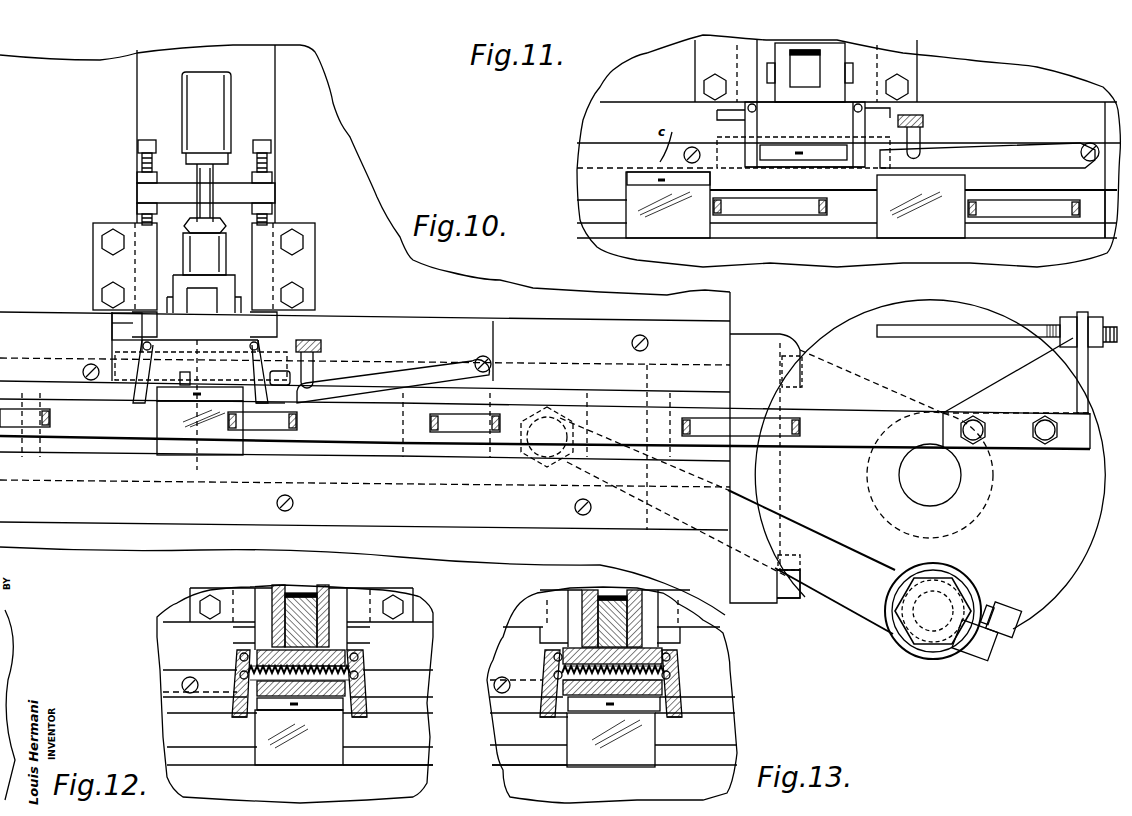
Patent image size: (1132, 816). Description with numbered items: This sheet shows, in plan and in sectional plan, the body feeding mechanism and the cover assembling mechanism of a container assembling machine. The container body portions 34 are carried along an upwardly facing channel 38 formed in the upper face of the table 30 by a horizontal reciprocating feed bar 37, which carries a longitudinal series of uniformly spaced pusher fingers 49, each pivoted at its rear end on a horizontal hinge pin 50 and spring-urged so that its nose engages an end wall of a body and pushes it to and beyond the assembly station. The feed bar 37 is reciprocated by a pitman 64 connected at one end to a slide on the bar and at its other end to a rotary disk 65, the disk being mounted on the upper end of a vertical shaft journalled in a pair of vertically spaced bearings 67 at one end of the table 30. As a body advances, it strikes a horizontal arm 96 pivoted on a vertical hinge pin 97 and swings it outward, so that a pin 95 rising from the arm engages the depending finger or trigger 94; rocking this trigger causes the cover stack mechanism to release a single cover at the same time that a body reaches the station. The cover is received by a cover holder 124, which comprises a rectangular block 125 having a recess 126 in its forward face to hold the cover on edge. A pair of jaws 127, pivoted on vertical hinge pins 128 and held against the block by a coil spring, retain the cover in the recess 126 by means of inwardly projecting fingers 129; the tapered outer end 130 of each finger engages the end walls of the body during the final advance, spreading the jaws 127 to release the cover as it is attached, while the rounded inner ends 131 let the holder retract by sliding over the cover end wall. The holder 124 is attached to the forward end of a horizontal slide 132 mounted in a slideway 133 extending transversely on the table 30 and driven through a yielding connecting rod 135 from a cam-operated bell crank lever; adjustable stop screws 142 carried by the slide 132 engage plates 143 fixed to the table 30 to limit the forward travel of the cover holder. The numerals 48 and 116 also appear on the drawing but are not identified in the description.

In FIG. 10, the table 30 is at (330, 110).
In FIG. 10, the slideway 133 is at (150, 75).
In FIG. 10, the yielding connecting rod 135 is at (198, 103).
In FIG. 10, the horizontal slide 132 is at (238, 243).
In FIG. 10, the adjustable stop screws 142 is at (137, 207).
In FIG. 10, the plates 143 is at (113, 272).
In FIG. 11, the plates 143 is at (710, 57).
In FIG. 12, the plates 143 is at (193, 610).
In FIG. 13, the plates 143 is at (580, 618).
In FIG. 10, the cover holder 124 is at (139, 342).
In FIG. 11, the cover holder 124 is at (742, 128).
In FIG. 12, the cover holder 124 is at (340, 647).
In FIG. 13, the cover holder 124 is at (647, 648).
In FIG. 10, the rectangular block 125 is at (213, 358).
In FIG. 11, the rectangular block 125 is at (815, 125).
In FIG. 12, the rectangular block 125 is at (290, 729).
In FIG. 13, the rectangular block 125 is at (614, 704).
In FIG. 10, the recess 126 is at (185, 377).
In FIG. 11, the recess 126 is at (816, 145).
In FIG. 12, the recess 126 is at (327, 690).
In FIG. 13, the recess 126 is at (596, 696).
In FIG. 10, the jaws 127 is at (132, 392).
In FIG. 12, the jaws 127 is at (383, 688).
In FIG. 13, the jaws 127 is at (677, 673).
In FIG. 10, the vertical hinge pins 128 is at (263, 337).
In FIG. 11, the vertical hinge pins 128 is at (880, 110).
In FIG. 12, the vertical hinge pins 128 is at (362, 658).
In FIG. 13, the vertical hinge pins 128 is at (670, 659).
In FIG. 10, the inwardly projecting fingers 129 is at (280, 407).
In FIG. 11, the inwardly projecting fingers 129 is at (750, 169).
In FIG. 12, the inwardly projecting fingers 129 is at (372, 728).
In FIG. 13, the inwardly projecting fingers 129 is at (543, 717).
In FIG. 10, the tapered outer end 130 is at (243, 412).
In FIG. 11, the tapered outer end 130 is at (858, 170).
In FIG. 12, the tapered outer end 130 is at (252, 718).
In FIG. 13, the tapered outer end 130 is at (662, 718).
In FIG. 10, the rounded inner ends 131 is at (153, 412).
In FIG. 11, the rounded inner ends 131 is at (790, 166).
In FIG. 12, the rounded inner ends 131 is at (333, 737).
In FIG. 13, the rounded inner ends 131 is at (558, 719).
In FIG. 10, the depending finger 94 is at (313, 338).
In FIG. 11, the depending finger 94 is at (925, 121).
In FIG. 10, the pin 95 is at (314, 366).
In FIG. 11, the pin 95 is at (920, 140).
In FIG. 10, the horizontal arm 96 is at (417, 352).
In FIG. 11, the horizontal arm 96 is at (1048, 134).
In FIG. 10, the vertical hinge pin 97 is at (483, 356).
In FIG. 11, the vertical hinge pin 97 is at (1092, 143).
In FIG. 10, the upwardly facing channel 38 is at (386, 450).
In FIG. 12, the upwardly facing channel 38 is at (392, 760).
In FIG. 13, the upwardly facing channel 38 is at (530, 762).
In FIG. 10, the pusher fingers 49 is at (741, 436).
In FIG. 11, the pusher fingers 49 is at (780, 215).
In FIG. 11, the body portions 34 is at (676, 229).
In FIG. 12, the body portions 34 is at (313, 760).
In FIG. 13, the body portions 34 is at (635, 762).
In FIG. 10, the feed bar 37 is at (848, 425).
In FIG. 11, the feed bar 37 is at (1095, 217).
In FIG. 10, the adjusting rod 48 is at (997, 330).
In FIG. 10, the horizontal hinge pin 50 is at (793, 412).
In FIG. 10, the hub bore 116 is at (948, 476).
In FIG. 10, the rotary disk 65 is at (1041, 510).
In FIG. 10, the bearings 67 is at (760, 598).
In FIG. 10, the pitman 64 is at (860, 597).